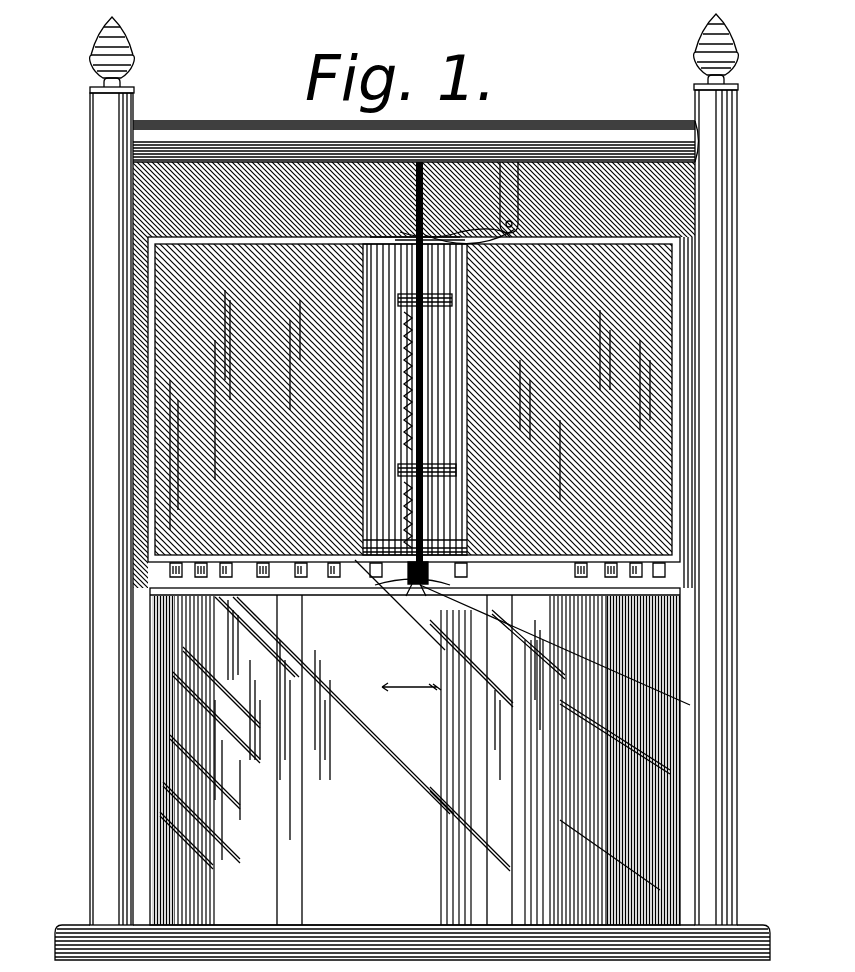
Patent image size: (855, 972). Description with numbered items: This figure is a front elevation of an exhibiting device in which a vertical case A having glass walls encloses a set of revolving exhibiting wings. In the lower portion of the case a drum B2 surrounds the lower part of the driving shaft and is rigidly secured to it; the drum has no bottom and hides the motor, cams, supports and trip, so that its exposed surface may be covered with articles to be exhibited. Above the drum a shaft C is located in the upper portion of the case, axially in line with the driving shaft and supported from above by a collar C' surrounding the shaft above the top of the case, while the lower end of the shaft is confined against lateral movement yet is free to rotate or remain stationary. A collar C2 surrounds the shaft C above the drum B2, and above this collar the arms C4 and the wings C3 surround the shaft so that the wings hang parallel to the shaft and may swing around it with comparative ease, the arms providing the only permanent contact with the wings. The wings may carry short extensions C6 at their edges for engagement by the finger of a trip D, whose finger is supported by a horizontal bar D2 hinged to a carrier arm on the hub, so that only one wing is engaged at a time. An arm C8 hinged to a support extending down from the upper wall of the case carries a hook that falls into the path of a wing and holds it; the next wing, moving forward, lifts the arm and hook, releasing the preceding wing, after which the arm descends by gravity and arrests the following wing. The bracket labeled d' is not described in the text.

The vertical case A is at (90, 482).
The drum B2 is at (415, 756).
The shaft C is at (389, 371).
The collar C' is at (425, 396).
The collar C2 is at (371, 569).
The wings C3 is at (414, 399).
The arms C4 is at (484, 470).
The short extensions C6 is at (257, 566).
The arm C8 is at (430, 228).
The trip D is at (522, 632).
The horizontal bar D2 is at (412, 598).
The pivot bracket d' is at (484, 203).